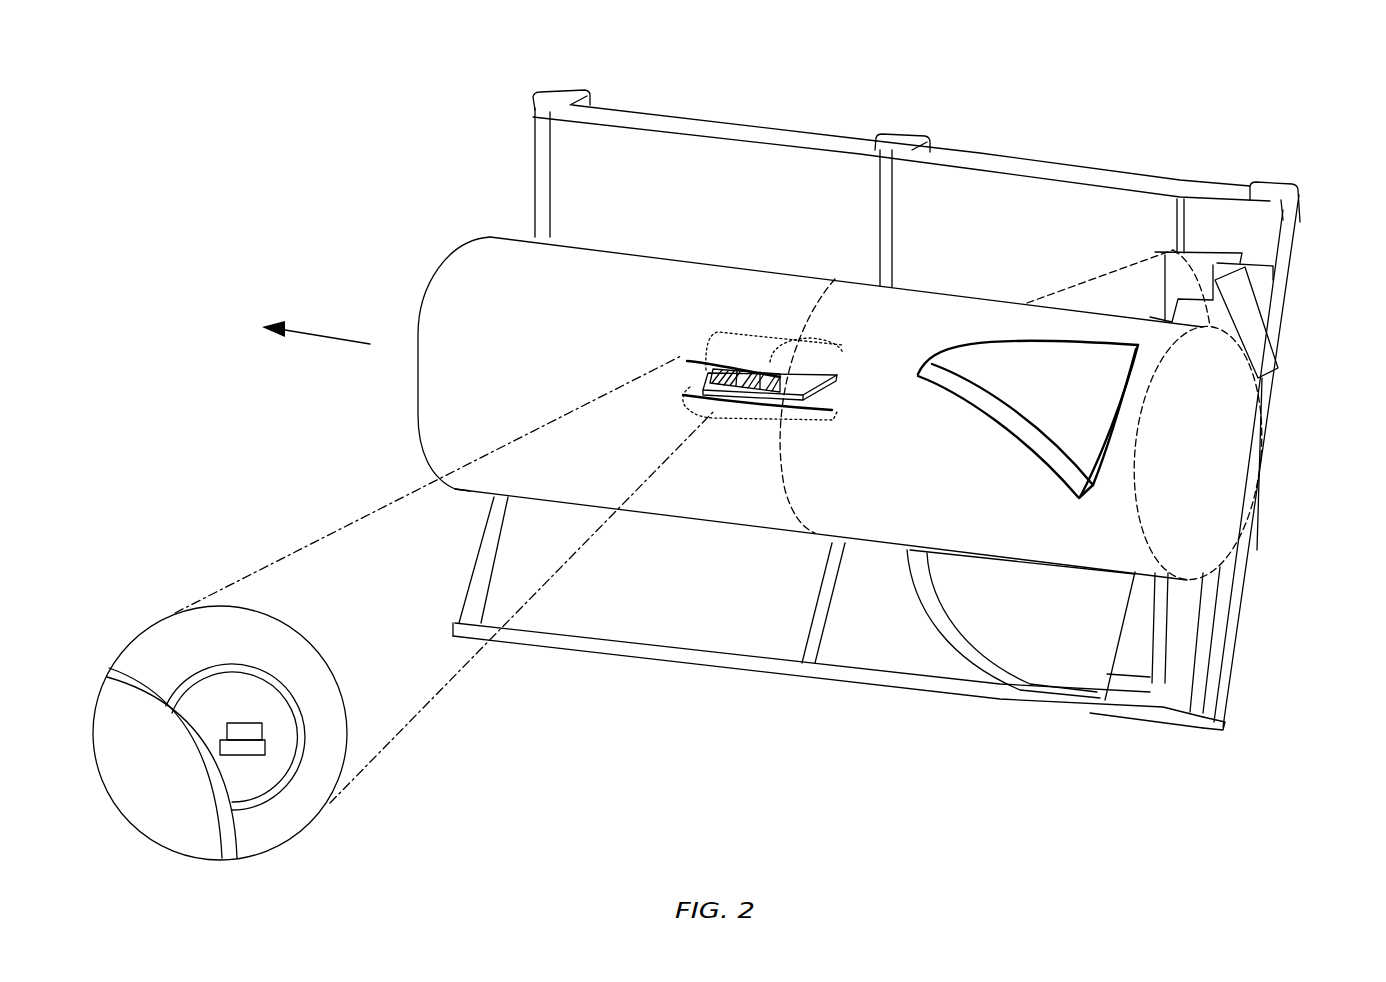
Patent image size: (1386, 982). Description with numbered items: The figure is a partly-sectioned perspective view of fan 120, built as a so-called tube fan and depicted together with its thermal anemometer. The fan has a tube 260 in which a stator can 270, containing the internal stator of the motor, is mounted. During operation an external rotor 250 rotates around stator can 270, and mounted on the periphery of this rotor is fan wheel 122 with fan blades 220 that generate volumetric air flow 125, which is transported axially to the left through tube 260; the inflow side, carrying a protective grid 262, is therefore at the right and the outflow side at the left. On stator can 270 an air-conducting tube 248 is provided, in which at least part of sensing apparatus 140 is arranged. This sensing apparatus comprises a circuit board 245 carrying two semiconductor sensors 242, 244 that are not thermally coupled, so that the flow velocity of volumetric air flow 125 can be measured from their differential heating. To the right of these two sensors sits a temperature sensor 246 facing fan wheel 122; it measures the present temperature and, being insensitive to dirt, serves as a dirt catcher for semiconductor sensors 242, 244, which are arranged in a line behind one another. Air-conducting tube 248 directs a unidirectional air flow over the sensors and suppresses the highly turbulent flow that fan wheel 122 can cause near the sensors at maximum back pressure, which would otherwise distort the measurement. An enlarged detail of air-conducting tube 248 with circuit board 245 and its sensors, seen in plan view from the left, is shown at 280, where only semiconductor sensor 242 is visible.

The fan 120 is at (185, 149).
The fan wheel 122 is at (907, 643).
The volumetric air flow 125 is at (335, 343).
The sensing apparatus 140 is at (541, 545).
The fan blades 220 is at (942, 579).
The semiconductor sensor 242 is at (721, 368).
The semiconductor sensor 244 is at (742, 368).
The circuit board 245 is at (688, 391).
The temperature sensor 246 is at (770, 363).
The air-conducting tube 248 is at (788, 421).
The external rotor 250 is at (925, 288).
The tube 260 is at (1060, 160).
The protective grid 262 is at (1277, 289).
The stator can 270 is at (572, 243).
The enlarged detail view 280 is at (345, 828).